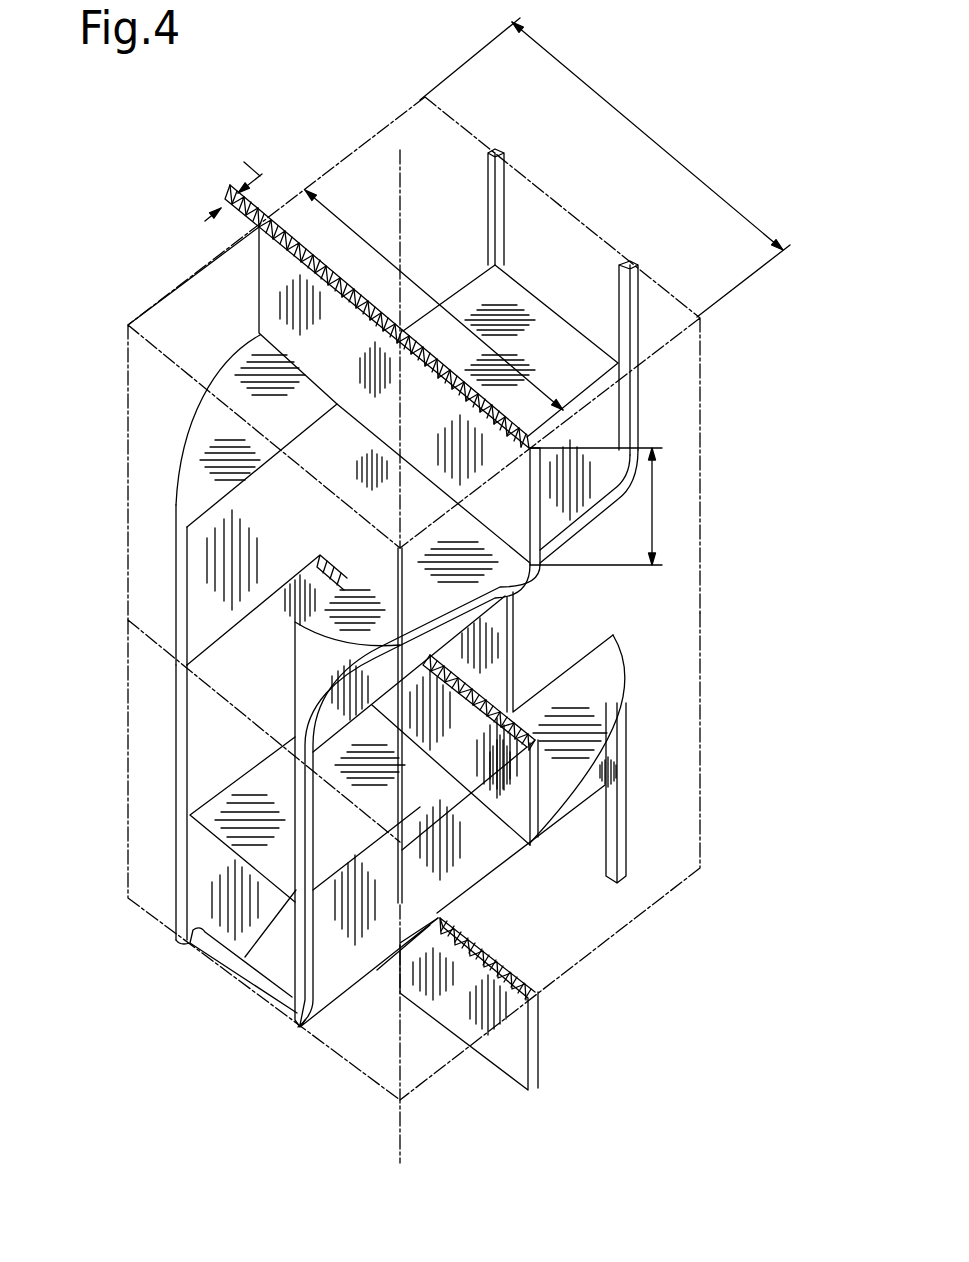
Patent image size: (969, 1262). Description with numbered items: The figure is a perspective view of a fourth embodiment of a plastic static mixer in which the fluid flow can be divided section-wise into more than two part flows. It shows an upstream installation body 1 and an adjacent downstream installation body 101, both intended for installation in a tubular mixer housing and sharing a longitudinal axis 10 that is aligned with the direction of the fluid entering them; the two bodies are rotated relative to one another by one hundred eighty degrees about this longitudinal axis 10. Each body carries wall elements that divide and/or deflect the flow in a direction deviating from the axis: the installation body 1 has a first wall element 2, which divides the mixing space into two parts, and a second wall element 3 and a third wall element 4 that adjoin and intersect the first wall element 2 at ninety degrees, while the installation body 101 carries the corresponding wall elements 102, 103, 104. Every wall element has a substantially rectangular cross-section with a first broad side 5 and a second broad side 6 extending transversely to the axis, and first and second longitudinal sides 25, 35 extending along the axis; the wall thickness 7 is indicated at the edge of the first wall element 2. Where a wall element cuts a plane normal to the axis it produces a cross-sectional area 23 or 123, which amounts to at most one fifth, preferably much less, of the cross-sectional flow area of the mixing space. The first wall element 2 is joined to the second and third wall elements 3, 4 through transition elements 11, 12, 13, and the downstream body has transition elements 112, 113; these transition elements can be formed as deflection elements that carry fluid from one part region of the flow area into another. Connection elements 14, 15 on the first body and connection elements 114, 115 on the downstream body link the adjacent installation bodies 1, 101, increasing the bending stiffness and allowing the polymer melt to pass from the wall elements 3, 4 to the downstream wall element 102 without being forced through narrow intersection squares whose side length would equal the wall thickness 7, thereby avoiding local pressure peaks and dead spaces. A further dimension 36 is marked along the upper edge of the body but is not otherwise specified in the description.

The installation body 1 is at (677, 295).
The first wall element 2 is at (275, 285).
The second wall element 3 is at (202, 572).
The third wall element 4 is at (463, 627).
The first broad side 5 is at (373, 251).
The second broad side 6 is at (257, 342).
The wall thickness 7 is at (233, 177).
The longitudinal axis 10 is at (395, 1142).
The transition element 11 is at (212, 421).
The transition element 12 is at (490, 573).
The transition element 13 is at (500, 300).
The connection element 14 is at (496, 149).
The connection element 15 is at (633, 265).
The cross-sectional area 23 is at (532, 447).
The first longitudinal side 25 is at (653, 508).
The second longitudinal side 35 is at (257, 250).
The element width 36 is at (628, 122).
The installation body 101 is at (705, 820).
The wall element 102 is at (517, 788).
The wall element 103 is at (228, 777).
The wall element 104 is at (327, 990).
The transition element 112 is at (597, 732).
The transition element 113 is at (243, 843).
The connection element 114 is at (177, 707).
The connection element 115 is at (247, 965).
The cross-sectional area 123 is at (532, 742).